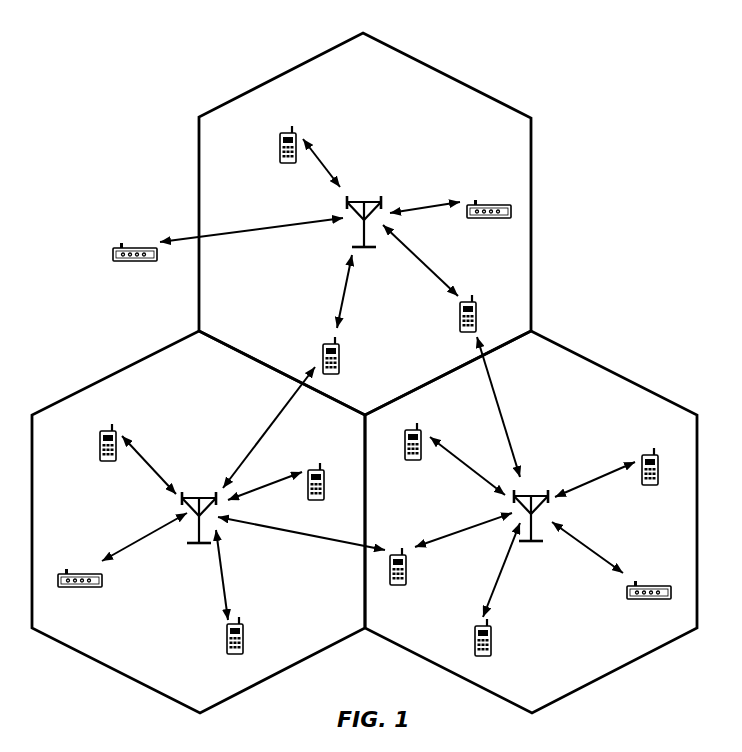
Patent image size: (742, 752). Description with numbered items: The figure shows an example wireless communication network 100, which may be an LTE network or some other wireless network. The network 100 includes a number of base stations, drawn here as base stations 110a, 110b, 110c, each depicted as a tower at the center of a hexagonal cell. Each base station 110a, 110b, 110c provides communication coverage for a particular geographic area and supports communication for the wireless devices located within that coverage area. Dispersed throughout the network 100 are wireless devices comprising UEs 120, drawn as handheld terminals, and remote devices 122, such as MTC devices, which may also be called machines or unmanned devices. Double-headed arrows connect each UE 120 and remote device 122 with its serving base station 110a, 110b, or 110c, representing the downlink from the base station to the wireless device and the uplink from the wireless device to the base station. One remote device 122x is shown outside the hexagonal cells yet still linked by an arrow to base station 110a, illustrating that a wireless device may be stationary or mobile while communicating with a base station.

The wireless communication network 100 is at (642, 89).
The base station 110a is at (368, 189).
The base station 110b is at (203, 485).
The base station 110c is at (540, 484).
The UE 120 is at (279, 138).
The remote device 122 is at (486, 202).
The remote device 122x is at (134, 246).